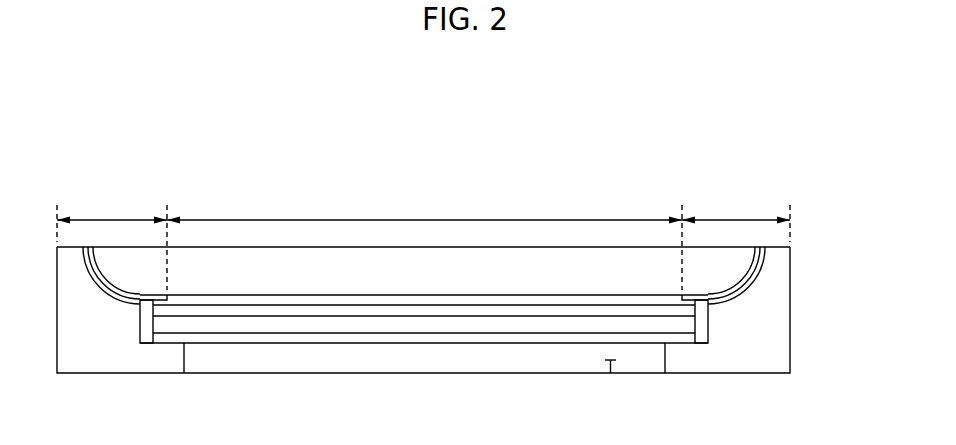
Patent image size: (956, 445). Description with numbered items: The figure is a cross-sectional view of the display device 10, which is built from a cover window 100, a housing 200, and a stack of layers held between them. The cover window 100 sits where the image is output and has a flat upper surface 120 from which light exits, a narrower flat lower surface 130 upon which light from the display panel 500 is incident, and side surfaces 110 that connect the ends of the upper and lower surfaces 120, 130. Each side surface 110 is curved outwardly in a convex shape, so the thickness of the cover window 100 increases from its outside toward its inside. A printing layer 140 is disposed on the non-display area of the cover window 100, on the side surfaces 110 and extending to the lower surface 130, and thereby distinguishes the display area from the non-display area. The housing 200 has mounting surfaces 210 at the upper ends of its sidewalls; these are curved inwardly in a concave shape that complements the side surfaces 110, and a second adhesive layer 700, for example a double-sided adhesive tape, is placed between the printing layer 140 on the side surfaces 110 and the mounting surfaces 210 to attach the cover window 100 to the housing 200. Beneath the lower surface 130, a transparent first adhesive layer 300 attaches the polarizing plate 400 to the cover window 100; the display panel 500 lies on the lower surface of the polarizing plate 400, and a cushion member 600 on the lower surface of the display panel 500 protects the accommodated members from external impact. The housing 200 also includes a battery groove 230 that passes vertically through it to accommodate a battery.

The display device 10 is at (460, 106).
The cover window 100 is at (507, 258).
The side surfaces 110 is at (745, 250).
The upper surface 120 is at (583, 247).
The lower surface 130 is at (535, 295).
The printing layer 140 is at (753, 263).
The housing 200 is at (755, 362).
The mounting surfaces 210 is at (752, 280).
The battery groove 230 is at (611, 373).
The first adhesive layer 300 is at (284, 300).
The polarizing plate 400 is at (333, 310).
The display panel 500 is at (392, 325).
The cushion member 600 is at (460, 340).
The second adhesive layer 700 is at (738, 292).